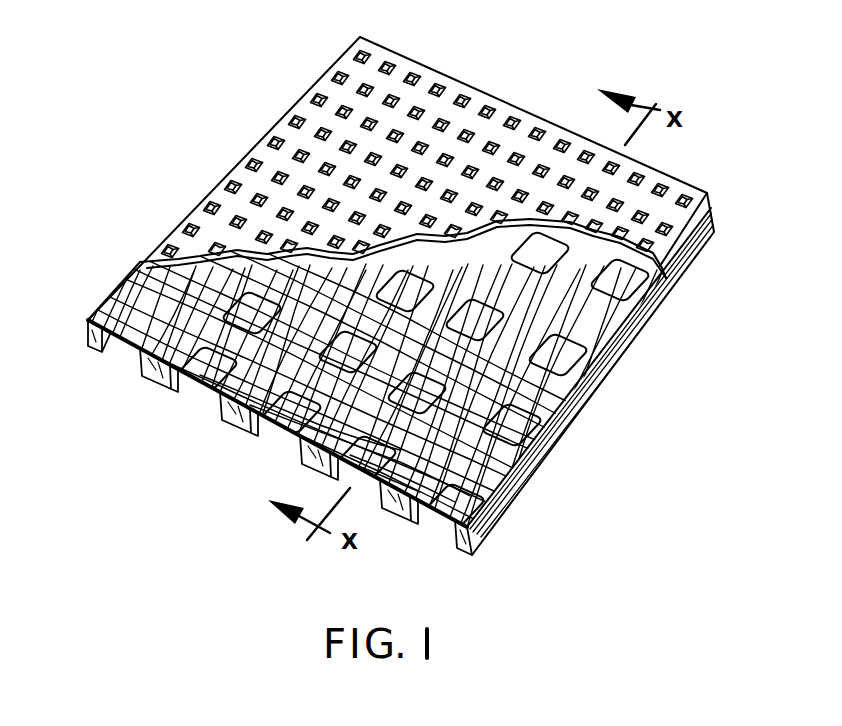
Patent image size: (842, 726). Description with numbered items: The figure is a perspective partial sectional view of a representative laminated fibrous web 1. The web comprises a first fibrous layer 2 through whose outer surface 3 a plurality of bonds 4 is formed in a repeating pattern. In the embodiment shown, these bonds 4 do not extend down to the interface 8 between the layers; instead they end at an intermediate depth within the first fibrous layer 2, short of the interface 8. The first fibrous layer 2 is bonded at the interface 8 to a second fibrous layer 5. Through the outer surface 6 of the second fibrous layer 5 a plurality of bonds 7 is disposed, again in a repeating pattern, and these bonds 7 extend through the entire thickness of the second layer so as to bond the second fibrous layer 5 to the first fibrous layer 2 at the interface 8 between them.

The laminated fibrous web 1 is at (252, 78).
The first fibrous layer 2 is at (217, 193).
The outer surface 3 is at (478, 98).
The bonds 4 is at (420, 63).
The second fibrous layer 5 is at (121, 285).
The outer surface 6 is at (170, 387).
The bonds 7 is at (563, 360).
The interface 8 is at (622, 307).